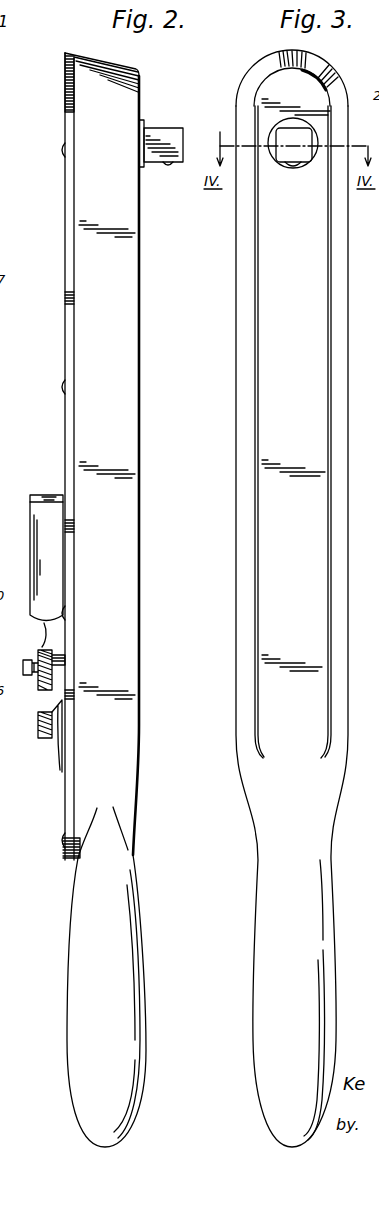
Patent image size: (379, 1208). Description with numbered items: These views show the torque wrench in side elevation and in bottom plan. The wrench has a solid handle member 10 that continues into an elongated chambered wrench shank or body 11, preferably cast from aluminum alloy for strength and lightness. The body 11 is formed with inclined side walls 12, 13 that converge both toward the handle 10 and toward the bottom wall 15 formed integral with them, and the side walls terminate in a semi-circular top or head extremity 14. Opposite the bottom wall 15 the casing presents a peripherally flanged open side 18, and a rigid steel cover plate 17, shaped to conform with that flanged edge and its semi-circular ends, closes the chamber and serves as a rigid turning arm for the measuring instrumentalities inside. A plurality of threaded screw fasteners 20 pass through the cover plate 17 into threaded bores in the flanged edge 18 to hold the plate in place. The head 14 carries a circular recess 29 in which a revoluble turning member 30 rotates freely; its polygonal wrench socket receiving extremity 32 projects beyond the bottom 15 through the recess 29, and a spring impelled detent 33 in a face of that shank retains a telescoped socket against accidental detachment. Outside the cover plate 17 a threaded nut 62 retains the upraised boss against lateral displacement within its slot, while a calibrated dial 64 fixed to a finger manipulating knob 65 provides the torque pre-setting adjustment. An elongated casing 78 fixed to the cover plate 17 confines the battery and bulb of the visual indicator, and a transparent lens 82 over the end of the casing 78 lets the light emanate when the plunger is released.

In FIG. 2, the handle member 10 is at (118, 914).
In FIG. 3, the handle member 10 is at (308, 881).
In FIG. 2, the wrench shank or body 11 is at (125, 262).
In FIG. 3, the wrench shank or body 11 is at (323, 278).
In FIG. 3, the side wall 12 is at (345, 478).
In FIG. 2, the side wall 13 is at (115, 518).
In FIG. 3, the side wall 13 is at (236, 445).
In FIG. 2, the head extremity 14 is at (88, 58).
In FIG. 3, the head extremity 14 is at (318, 69).
In FIG. 2, the bottom wall 15 is at (140, 328).
In FIG. 3, the bottom wall 15 is at (308, 308).
In FIG. 2, the cover plate 17 is at (60, 267).
In FIG. 2, the peripherally flanged open side 18 is at (75, 446).
In FIG. 2, the threaded screw fasteners 20 is at (62, 151).
In FIG. 3, the circular recess 29 is at (272, 130).
In FIG. 2, the revoluble turning member 30 is at (146, 121).
In FIG. 3, the revoluble turning member 30 is at (284, 165).
In FIG. 2, the polygonal wrench socket receiving extremity 32 is at (165, 133).
In FIG. 3, the polygonal wrench socket receiving extremity 32 is at (306, 138).
In FIG. 2, the spring impelled detent 33 is at (167, 166).
In FIG. 3, the spring impelled detent 33 is at (293, 168).
In FIG. 2, the threaded nut 62 is at (42, 690).
In FIG. 2, the calibrated dial 64 is at (62, 771).
In FIG. 2, the finger manipulating knob 65 is at (40, 743).
In FIG. 2, the elongated casing 78 is at (40, 542).
In FIG. 2, the transparent lens 82 is at (42, 636).